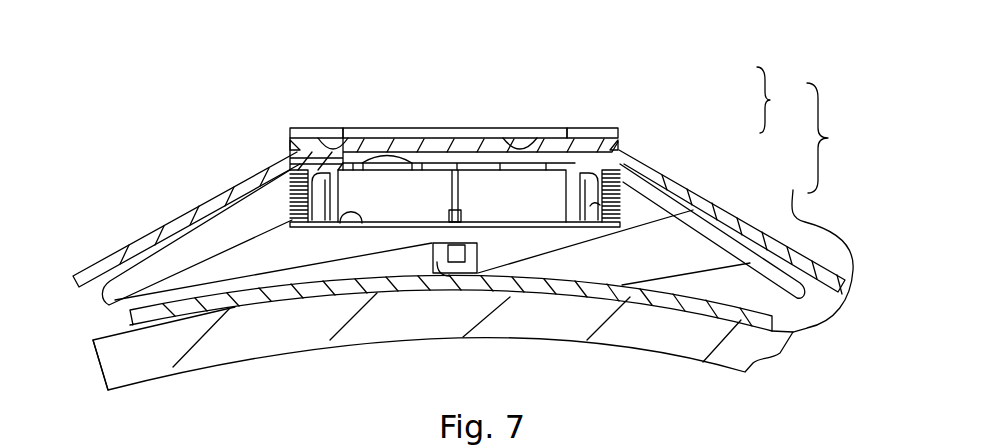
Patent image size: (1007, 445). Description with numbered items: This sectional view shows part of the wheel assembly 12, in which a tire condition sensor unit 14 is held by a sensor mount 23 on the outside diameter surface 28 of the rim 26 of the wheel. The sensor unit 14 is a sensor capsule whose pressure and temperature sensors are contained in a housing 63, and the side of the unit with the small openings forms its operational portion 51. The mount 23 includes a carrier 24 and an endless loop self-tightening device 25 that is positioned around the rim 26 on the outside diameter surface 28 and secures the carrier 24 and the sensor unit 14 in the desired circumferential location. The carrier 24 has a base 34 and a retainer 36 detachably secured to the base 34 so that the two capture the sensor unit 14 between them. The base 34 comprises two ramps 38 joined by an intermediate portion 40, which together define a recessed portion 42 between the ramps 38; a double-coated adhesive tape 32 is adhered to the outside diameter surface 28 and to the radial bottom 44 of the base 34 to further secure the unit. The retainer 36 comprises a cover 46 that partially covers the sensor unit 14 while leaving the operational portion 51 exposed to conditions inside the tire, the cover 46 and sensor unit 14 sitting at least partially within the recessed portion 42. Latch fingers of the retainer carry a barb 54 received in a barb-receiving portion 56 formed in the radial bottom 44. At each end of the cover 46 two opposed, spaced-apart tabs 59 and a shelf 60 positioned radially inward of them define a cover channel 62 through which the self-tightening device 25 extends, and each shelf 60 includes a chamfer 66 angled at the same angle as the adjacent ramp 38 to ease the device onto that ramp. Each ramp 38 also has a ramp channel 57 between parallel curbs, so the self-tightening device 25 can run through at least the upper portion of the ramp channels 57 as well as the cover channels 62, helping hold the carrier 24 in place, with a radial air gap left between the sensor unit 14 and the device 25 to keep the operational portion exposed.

The wheel assembly 12 is at (141, 155).
The sensor unit 14 is at (437, 207).
The sensor mount 23 is at (834, 138).
The carrier 24 is at (781, 100).
The endless loop self-tightening device 25 is at (766, 236).
The rim 26 is at (110, 365).
The outside diameter surface 28 is at (96, 337).
The double-coated adhesive tape 32 is at (818, 249).
The base 34 is at (697, 245).
The retainer 36 is at (655, 165).
The ramp 38 is at (165, 287).
The intermediate portion 40 is at (500, 262).
The recessed portion 42 is at (347, 224).
The radial bottom 44 is at (248, 295).
The cover 46 is at (594, 208).
The operational portion 51 is at (423, 160).
The barb 54 is at (455, 255).
The barb-receiving portion 56 is at (447, 275).
The ramp channel 57 is at (224, 215).
The tab 59 is at (324, 132).
The shelf 60 is at (330, 175).
The cover channel 62 is at (348, 140).
The housing 63 is at (503, 185).
The chamfer 66 is at (290, 144).